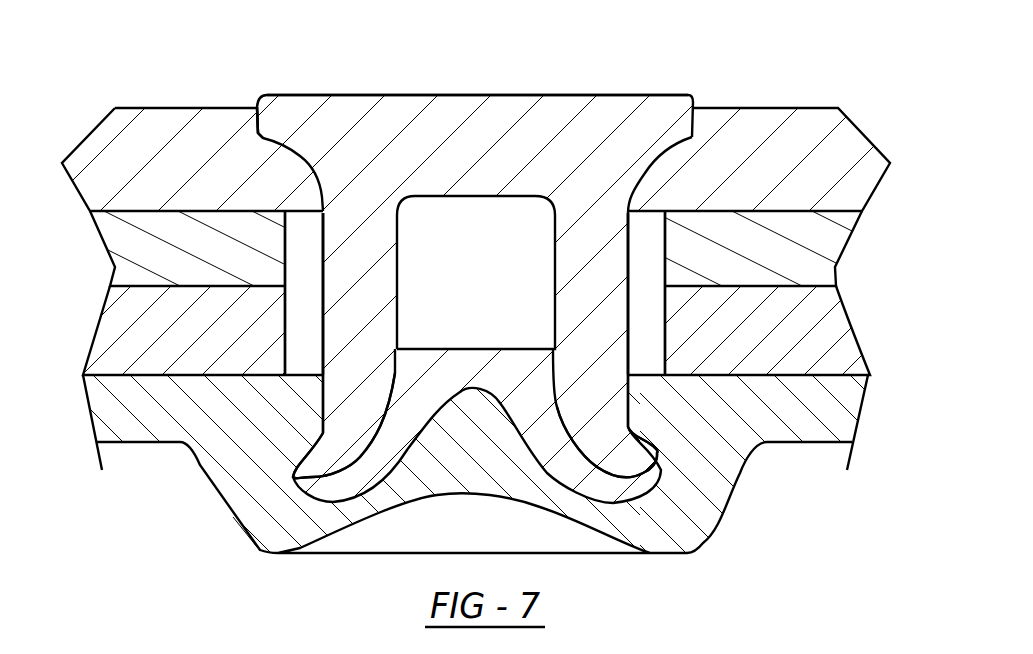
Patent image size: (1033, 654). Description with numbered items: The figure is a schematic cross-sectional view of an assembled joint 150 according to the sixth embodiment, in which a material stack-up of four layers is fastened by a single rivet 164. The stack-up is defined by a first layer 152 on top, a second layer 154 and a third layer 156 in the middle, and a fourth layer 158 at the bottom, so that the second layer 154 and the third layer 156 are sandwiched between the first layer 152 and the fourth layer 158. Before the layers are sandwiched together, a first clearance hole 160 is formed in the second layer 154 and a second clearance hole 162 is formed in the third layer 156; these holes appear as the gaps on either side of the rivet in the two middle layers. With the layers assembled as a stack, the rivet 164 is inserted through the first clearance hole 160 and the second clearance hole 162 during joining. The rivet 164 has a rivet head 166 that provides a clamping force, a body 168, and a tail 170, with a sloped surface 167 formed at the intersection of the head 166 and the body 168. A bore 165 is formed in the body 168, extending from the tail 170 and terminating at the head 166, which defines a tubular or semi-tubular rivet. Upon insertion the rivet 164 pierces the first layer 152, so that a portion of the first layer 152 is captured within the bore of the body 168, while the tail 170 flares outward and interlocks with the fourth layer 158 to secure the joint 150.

The joint 150 is at (146, 73).
The first layer 152 is at (122, 170).
The second layer 154 is at (148, 244).
The third layer 156 is at (140, 335).
The fourth layer 158 is at (133, 403).
The first clearance hole 160 is at (627, 213).
The second clearance hole 162 is at (652, 340).
The rivet 164 is at (290, 113).
The bore 165 is at (485, 238).
The rivet head 166 is at (500, 117).
The sloped surface 167 is at (272, 140).
The body 168 is at (370, 362).
The tail 170 is at (628, 448).